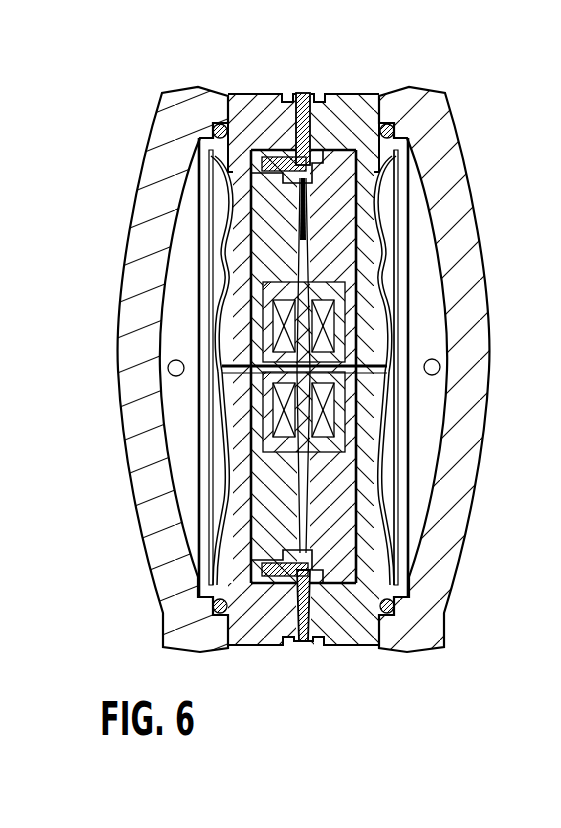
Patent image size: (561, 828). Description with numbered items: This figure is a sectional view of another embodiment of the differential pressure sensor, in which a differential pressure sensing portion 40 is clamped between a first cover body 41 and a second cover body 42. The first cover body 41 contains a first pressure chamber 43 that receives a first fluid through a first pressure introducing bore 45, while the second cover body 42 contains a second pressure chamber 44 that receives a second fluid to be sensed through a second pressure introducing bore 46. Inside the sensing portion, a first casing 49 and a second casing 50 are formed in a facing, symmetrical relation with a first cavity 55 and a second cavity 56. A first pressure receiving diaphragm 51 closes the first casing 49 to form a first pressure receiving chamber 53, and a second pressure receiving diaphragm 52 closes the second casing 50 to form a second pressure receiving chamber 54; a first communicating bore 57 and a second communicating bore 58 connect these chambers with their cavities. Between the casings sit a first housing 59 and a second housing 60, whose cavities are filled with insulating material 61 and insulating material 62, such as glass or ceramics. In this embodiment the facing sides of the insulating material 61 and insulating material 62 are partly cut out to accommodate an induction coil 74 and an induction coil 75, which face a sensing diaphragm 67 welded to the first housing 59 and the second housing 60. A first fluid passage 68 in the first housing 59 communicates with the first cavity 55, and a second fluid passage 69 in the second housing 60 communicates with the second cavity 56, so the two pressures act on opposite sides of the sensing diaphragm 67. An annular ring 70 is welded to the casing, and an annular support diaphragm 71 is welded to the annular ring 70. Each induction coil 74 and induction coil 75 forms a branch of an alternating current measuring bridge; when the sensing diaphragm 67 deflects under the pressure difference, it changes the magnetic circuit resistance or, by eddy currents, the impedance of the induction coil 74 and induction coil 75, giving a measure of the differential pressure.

The differential pressure sensing portion 40 is at (313, 88).
The first cover body 41 is at (153, 183).
The second cover body 42 is at (458, 190).
The first pressure chamber 43 is at (182, 217).
The second pressure chamber 44 is at (428, 270).
The first pressure introducing bore 45 is at (168, 368).
The second pressure introducing bore 46 is at (440, 366).
The first casing 49 is at (262, 94).
The second casing 50 is at (345, 94).
The first pressure receiving diaphragm 51 is at (232, 485).
The second pressure receiving diaphragm 52 is at (380, 458).
The first pressure receiving chamber 53 is at (207, 427).
The second pressure receiving chamber 54 is at (398, 418).
The first cavity 55 is at (252, 240).
The second cavity 56 is at (377, 240).
The first communicating bore 57 is at (215, 350).
The second communicating bore 58 is at (372, 340).
The first housing 59 is at (270, 512).
The second housing 60 is at (333, 512).
The insulating material 61 is at (235, 296).
The insulating material 62 is at (345, 300).
The sensing diaphragm 67 is at (217, 277).
The first fluid passage 68 is at (240, 385).
The second fluid passage 69 is at (345, 390).
The annular ring 70 is at (278, 588).
The annular support diaphragm 71 is at (318, 588).
The induction coil 74 is at (240, 318).
The induction coil 75 is at (357, 480).